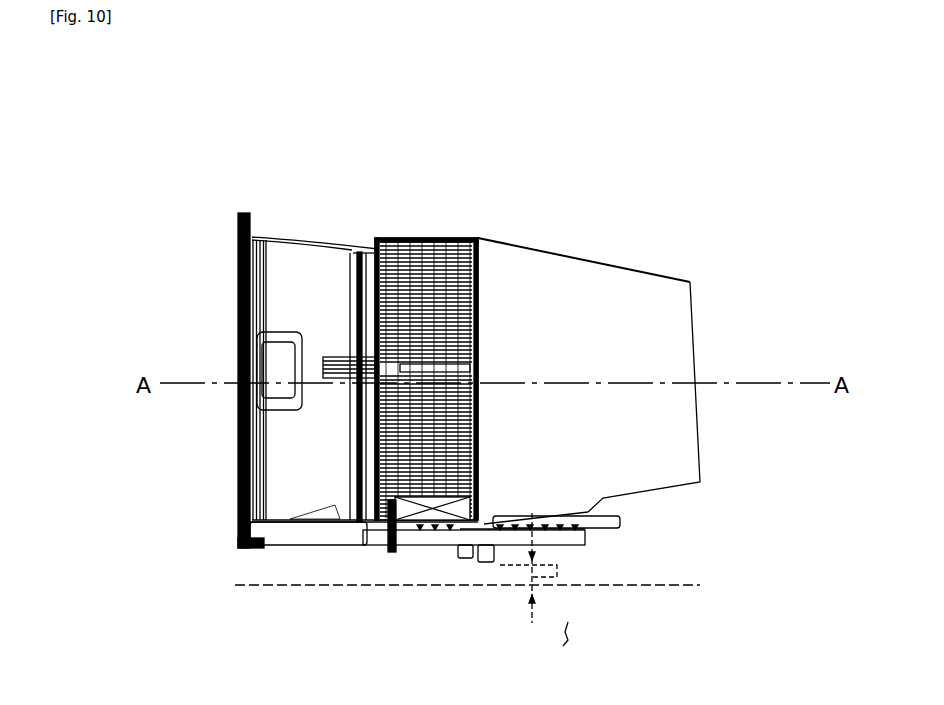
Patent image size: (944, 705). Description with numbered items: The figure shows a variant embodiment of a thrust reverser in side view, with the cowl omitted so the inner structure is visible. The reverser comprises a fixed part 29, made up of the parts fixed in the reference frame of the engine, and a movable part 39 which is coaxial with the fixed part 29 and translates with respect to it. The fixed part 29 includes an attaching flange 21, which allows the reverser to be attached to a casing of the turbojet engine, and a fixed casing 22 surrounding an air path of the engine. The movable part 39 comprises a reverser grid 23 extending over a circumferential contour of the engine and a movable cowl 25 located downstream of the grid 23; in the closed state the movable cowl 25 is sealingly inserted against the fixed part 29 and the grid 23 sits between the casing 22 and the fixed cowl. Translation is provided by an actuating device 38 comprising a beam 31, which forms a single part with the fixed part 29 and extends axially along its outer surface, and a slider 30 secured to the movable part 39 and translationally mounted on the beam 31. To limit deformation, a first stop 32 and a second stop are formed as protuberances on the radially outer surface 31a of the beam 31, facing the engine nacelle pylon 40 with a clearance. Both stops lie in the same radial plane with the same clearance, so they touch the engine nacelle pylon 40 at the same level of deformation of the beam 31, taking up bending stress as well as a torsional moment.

The attaching flange 21 is at (245, 214).
The fixed part 29 is at (305, 198).
The fixed casing 22 is at (320, 280).
The reverser grid 23 is at (430, 240).
The movable part 39 is at (608, 224).
The movable cowl 25 is at (638, 305).
The slider 30 is at (563, 545).
The beam 31 is at (316, 535).
The radially outer surface 31a is at (498, 550).
The stop 32 is at (476, 563).
The actuating device 38 is at (420, 563).
The engine nacelle pylon 40 is at (680, 584).